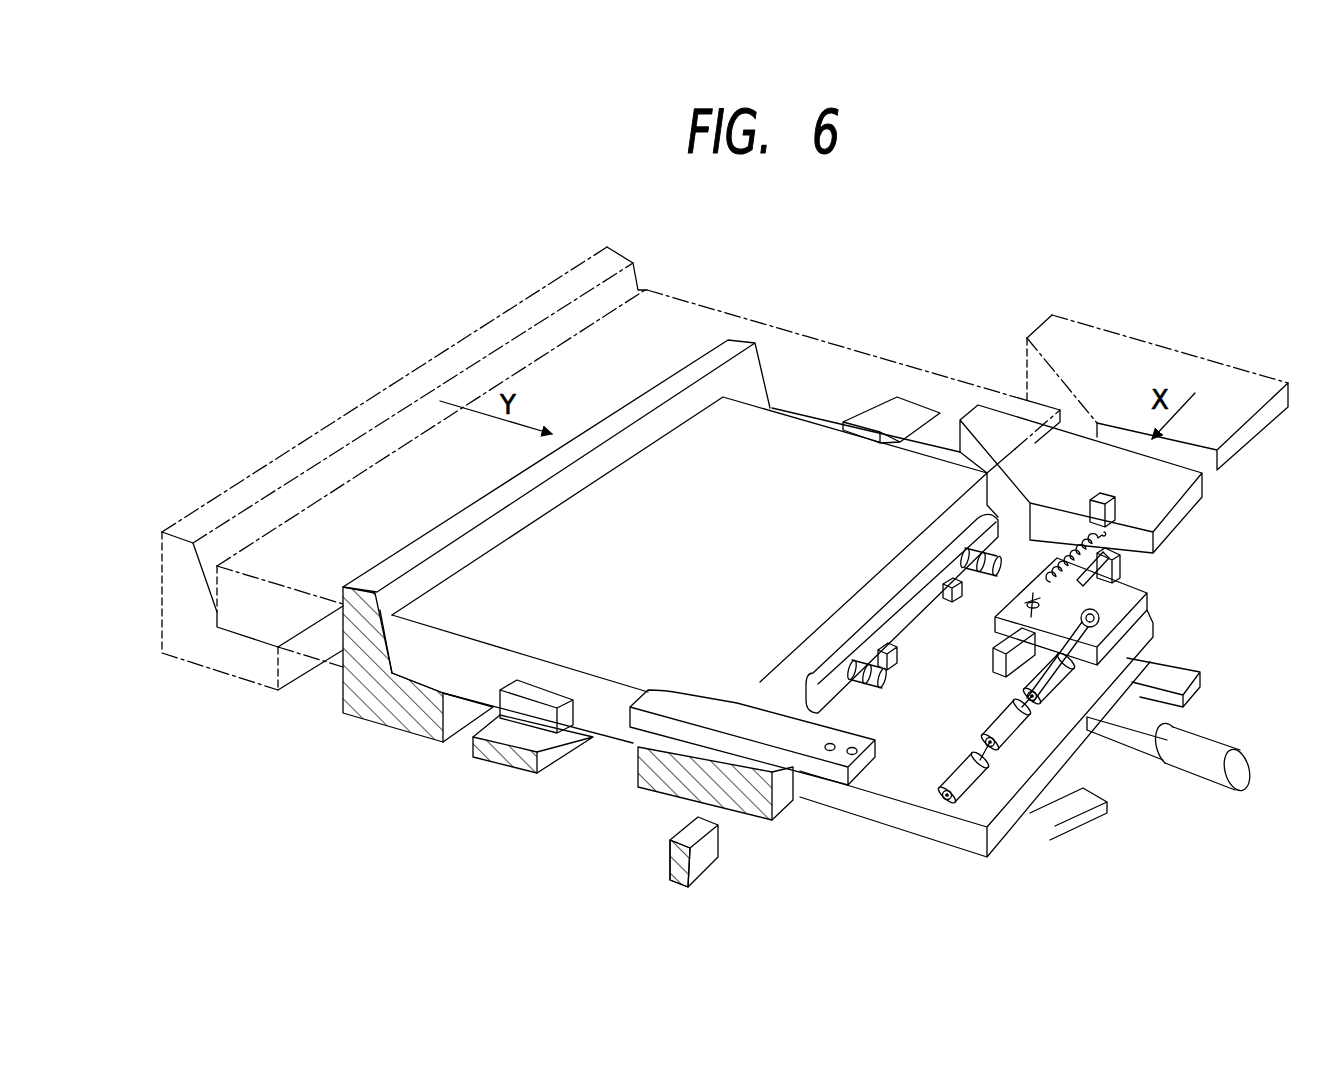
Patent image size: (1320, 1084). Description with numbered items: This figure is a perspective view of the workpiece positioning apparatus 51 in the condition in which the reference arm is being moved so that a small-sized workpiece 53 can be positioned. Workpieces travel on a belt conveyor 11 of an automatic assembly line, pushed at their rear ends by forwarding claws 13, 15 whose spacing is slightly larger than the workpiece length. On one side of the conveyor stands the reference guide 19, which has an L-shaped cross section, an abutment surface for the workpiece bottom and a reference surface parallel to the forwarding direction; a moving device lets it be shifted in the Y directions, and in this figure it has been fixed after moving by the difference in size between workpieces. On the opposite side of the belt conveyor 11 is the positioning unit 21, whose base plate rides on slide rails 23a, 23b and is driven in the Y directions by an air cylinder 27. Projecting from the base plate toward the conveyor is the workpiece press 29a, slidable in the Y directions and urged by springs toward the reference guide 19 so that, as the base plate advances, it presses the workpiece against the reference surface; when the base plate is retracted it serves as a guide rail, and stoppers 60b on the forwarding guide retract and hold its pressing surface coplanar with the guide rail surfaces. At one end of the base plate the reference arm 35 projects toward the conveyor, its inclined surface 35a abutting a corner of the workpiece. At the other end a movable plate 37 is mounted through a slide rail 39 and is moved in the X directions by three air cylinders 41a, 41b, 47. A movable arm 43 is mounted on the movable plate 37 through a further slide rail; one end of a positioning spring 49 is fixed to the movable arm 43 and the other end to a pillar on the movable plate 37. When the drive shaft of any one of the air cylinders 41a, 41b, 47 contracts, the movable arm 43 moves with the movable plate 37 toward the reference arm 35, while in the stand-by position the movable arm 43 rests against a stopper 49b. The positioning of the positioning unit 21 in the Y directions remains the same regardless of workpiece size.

The belt conveyor 11 is at (500, 758).
The forwarding claw 13 is at (545, 722).
The forwarding claw 15 is at (876, 415).
The reference guide 19 is at (735, 348).
The positioning unit 21 is at (892, 846).
The slide rail 23a is at (1063, 830).
The slide rail 23b is at (1190, 672).
The air cylinder 27 is at (1225, 748).
The workpiece press 29a is at (836, 662).
The reference arm 35 is at (822, 772).
The inclined surface 35a is at (700, 710).
The movable plate 37 is at (1165, 645).
The slide rail 39 is at (993, 653).
The air cylinder 41a is at (972, 790).
The air cylinder 41b is at (1022, 733).
The movable arm 43 is at (1185, 512).
The air cylinder 47 is at (1027, 680).
The positioning spring 49 is at (1107, 592).
The stopper 49b is at (1135, 572).
The workpiece positioning apparatus 51 is at (1000, 338).
The small-sized workpiece 53 is at (418, 660).
The stoppers 60b is at (883, 647).